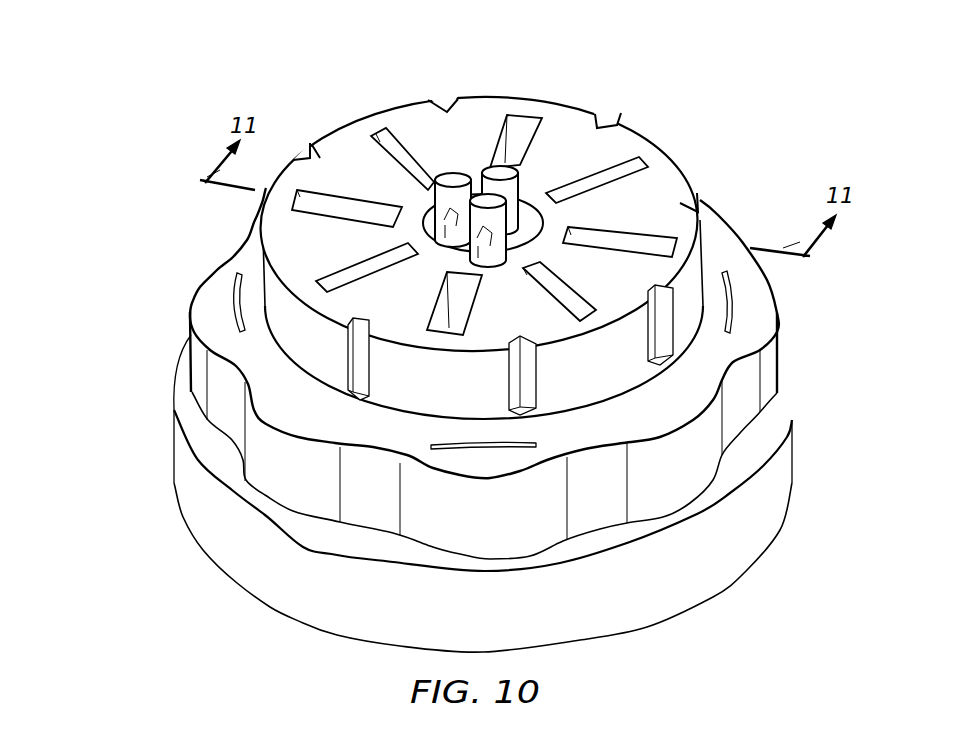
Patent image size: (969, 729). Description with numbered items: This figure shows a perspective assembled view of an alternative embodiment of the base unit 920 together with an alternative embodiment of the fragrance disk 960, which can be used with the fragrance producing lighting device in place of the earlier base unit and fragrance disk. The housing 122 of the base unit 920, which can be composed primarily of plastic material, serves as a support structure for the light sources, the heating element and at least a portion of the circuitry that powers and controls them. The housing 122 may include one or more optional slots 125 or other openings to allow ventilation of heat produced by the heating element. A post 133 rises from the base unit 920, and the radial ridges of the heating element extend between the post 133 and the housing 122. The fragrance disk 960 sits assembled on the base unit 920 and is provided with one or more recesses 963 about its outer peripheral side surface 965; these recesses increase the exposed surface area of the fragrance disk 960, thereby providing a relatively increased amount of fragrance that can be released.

The base unit 920 is at (696, 60).
The housing 122 is at (777, 323).
The slots 125 is at (733, 303).
The fragrance disk 960 is at (376, 123).
The recesses 963 is at (446, 97).
The outer peripheral side surface 965 is at (637, 332).
The post 133 is at (530, 225).